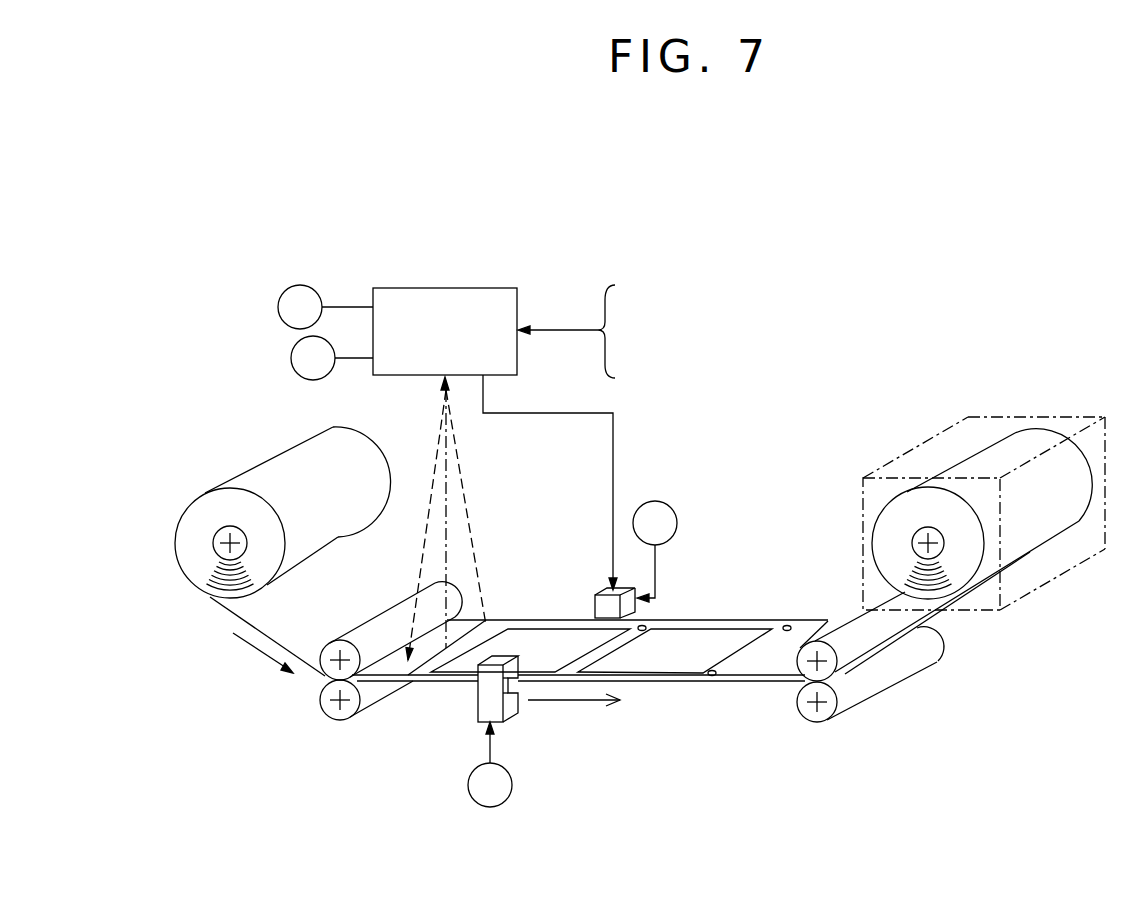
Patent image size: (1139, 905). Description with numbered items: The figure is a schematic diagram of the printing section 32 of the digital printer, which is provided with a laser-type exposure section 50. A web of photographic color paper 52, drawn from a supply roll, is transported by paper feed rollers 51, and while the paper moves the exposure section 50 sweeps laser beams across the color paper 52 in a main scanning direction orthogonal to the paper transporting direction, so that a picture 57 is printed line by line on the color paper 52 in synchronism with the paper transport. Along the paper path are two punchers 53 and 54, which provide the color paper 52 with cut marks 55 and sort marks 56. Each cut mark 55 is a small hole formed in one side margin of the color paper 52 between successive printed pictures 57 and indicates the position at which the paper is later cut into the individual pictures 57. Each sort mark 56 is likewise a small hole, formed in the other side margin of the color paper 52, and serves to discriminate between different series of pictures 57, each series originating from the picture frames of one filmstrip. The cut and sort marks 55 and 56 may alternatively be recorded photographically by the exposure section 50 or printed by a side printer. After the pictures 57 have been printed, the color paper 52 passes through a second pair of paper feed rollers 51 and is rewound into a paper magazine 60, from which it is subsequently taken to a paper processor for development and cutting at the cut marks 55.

The printing section 32 is at (403, 771).
The exposure section 50 is at (386, 291).
The paper feed rollers 51 is at (410, 597).
The photographic color paper 52 is at (365, 446).
The puncher 53 is at (608, 592).
The puncher 54 is at (508, 712).
The cut mark 55 is at (785, 627).
The sort mark 56 is at (714, 676).
The picture 57 is at (533, 632).
The paper magazine 60 is at (875, 468).